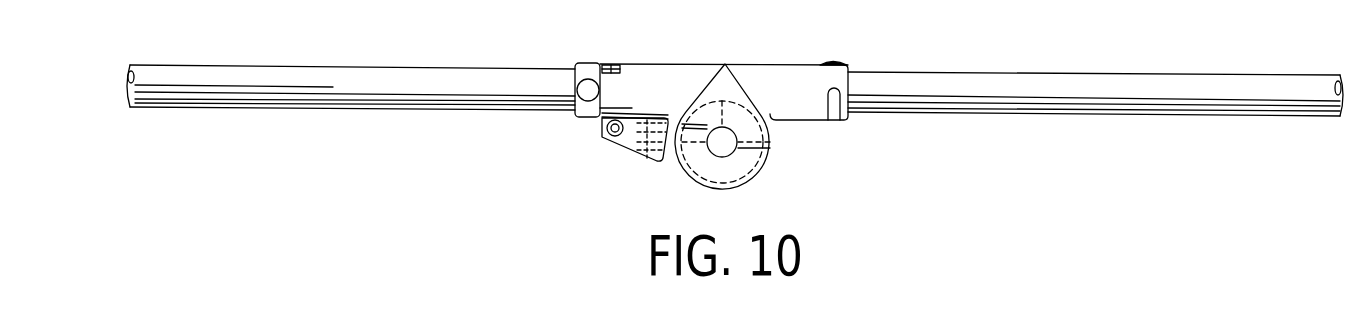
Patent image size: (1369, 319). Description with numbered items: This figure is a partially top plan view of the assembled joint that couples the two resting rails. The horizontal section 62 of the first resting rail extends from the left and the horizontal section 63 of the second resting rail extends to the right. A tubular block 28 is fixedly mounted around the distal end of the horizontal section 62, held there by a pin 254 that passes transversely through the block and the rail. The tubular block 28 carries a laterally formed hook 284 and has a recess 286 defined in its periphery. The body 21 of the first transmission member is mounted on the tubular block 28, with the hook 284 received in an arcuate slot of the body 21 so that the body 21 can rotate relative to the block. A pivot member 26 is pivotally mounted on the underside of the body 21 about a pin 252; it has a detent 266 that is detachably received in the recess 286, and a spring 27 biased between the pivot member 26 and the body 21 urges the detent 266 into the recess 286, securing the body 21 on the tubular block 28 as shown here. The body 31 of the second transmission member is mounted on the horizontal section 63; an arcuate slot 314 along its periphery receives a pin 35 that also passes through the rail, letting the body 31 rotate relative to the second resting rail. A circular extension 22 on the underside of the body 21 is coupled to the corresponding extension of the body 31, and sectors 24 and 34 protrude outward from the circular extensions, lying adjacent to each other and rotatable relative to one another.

The horizontal section 62 is at (480, 70).
The horizontal section 63 is at (1023, 83).
The pin 254 is at (578, 84).
The tubular block 28 is at (588, 63).
The hook 284 is at (615, 62).
The body 21 is at (670, 68).
The sector 24 is at (713, 113).
The body 31 is at (797, 72).
The pin 35 is at (837, 63).
The recess 286 is at (585, 122).
The detent 266 is at (600, 130).
The pin 252 is at (586, 122).
The pivot member 26 is at (630, 153).
The spring 27 is at (645, 165).
The circular extension 22 is at (743, 189).
The sector 34 is at (752, 133).
The arcuate slot 314 is at (836, 121).